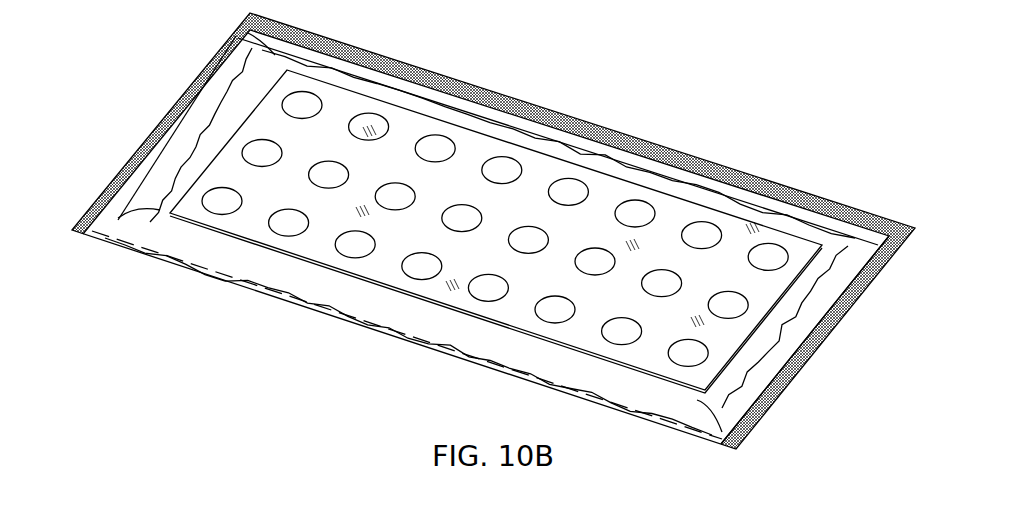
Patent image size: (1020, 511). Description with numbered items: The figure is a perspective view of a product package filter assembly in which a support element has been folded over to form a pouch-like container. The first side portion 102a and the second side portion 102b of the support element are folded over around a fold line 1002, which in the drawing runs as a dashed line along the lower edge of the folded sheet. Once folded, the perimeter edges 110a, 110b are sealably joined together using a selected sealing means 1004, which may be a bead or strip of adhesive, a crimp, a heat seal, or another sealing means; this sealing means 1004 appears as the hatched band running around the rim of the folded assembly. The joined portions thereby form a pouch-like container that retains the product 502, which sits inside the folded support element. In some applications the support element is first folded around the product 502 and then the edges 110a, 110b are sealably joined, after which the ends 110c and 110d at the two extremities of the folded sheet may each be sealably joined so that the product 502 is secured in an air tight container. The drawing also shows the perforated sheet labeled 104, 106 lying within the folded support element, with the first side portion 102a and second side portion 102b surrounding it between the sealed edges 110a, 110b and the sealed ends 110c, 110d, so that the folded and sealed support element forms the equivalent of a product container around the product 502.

The sealing means 1004 is at (205, 78).
The fold line 1002 is at (317, 307).
The first side portion 102a is at (182, 133).
The second side portion 102b is at (478, 368).
The base layer 104 is at (496, 225).
The cover layer 106 is at (422, 112).
The perimeter edge 110a is at (558, 141).
The perimeter edge 110b is at (684, 153).
The end 110c is at (118, 176).
The end 110d is at (867, 290).
The product 502 is at (795, 222).